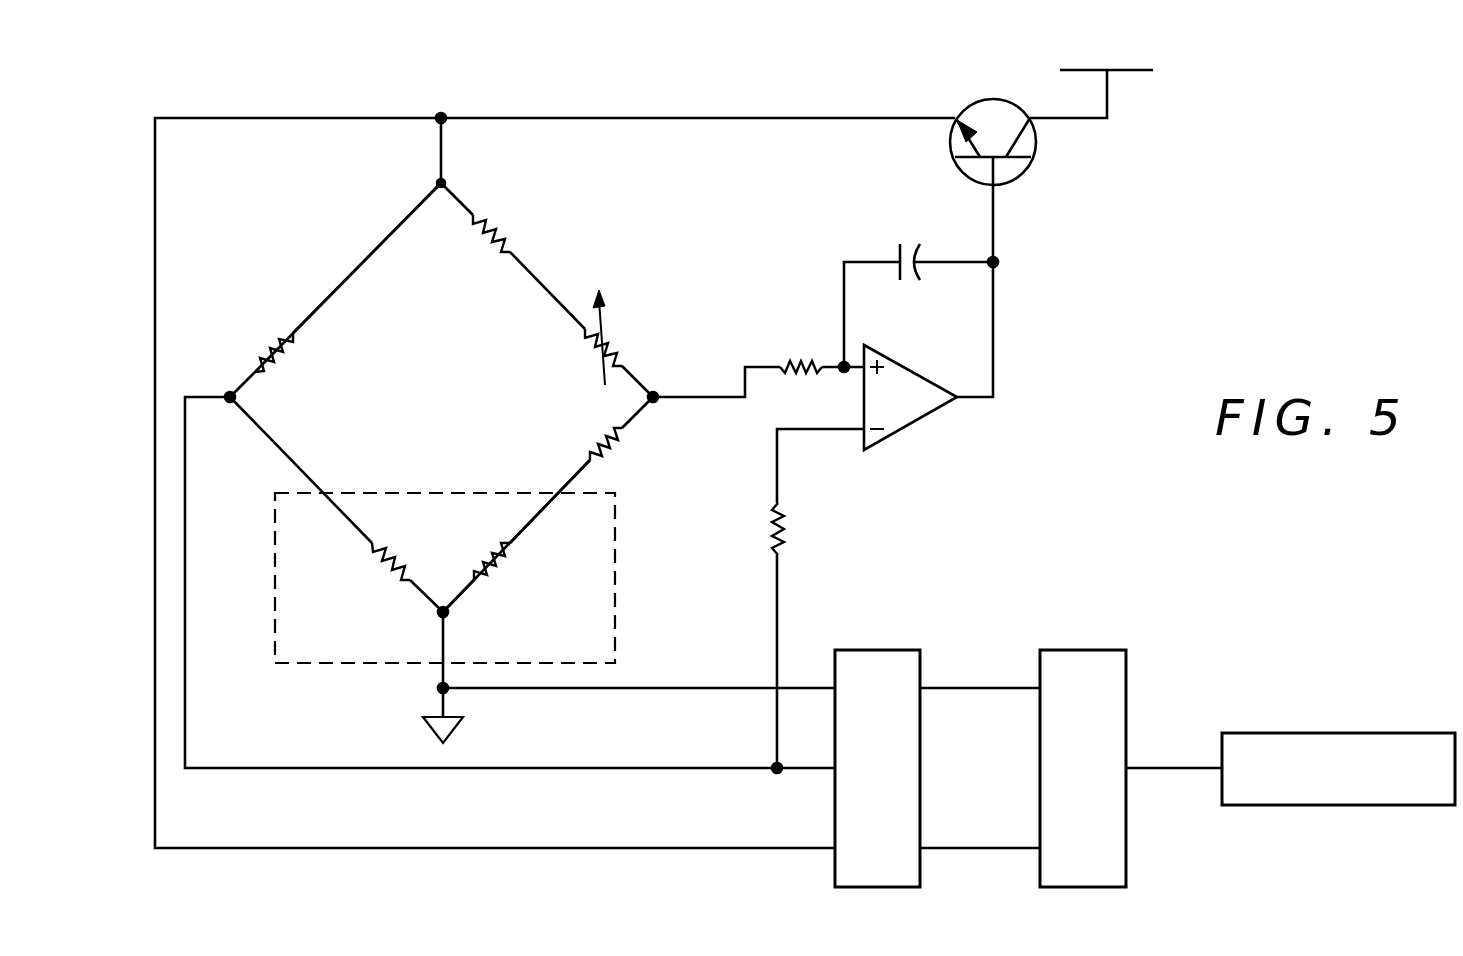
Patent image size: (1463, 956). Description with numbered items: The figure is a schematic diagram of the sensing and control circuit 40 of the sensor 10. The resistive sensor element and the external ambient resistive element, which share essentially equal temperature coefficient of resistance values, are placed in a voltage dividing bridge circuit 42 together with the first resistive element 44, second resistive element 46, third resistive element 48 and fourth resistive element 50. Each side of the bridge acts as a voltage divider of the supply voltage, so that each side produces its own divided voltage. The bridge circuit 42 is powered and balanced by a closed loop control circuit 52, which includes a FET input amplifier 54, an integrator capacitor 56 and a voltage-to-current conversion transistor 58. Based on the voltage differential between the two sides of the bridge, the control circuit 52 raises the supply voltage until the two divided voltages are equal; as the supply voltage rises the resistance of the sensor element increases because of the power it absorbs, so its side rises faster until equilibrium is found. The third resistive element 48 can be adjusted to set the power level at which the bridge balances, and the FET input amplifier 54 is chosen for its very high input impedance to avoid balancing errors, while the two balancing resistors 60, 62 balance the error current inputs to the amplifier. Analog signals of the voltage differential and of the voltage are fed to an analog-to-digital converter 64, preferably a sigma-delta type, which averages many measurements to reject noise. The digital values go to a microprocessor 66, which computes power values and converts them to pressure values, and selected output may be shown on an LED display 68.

The sensor 10 is at (276, 566).
The sensing and control circuit 40 is at (722, 98).
The voltage dividing bridge circuit 42 is at (357, 235).
The resistive element R1 44 is at (275, 338).
The resistive element R2 46 is at (490, 250).
The resistive element R3 48 is at (590, 348).
The resistive element R4 50 is at (592, 452).
The closed loop control circuit 52 is at (1070, 290).
The FET input amplifier 54 is at (908, 428).
The integrator capacitor 56 is at (905, 246).
The voltage-to-current conversion transistor 58 is at (958, 163).
The resistor 60 is at (806, 355).
The resistor 62 is at (770, 532).
The analog-to-digital converter 64 is at (852, 650).
The microprocessor 66 is at (1063, 650).
The LED display 68 is at (1312, 733).